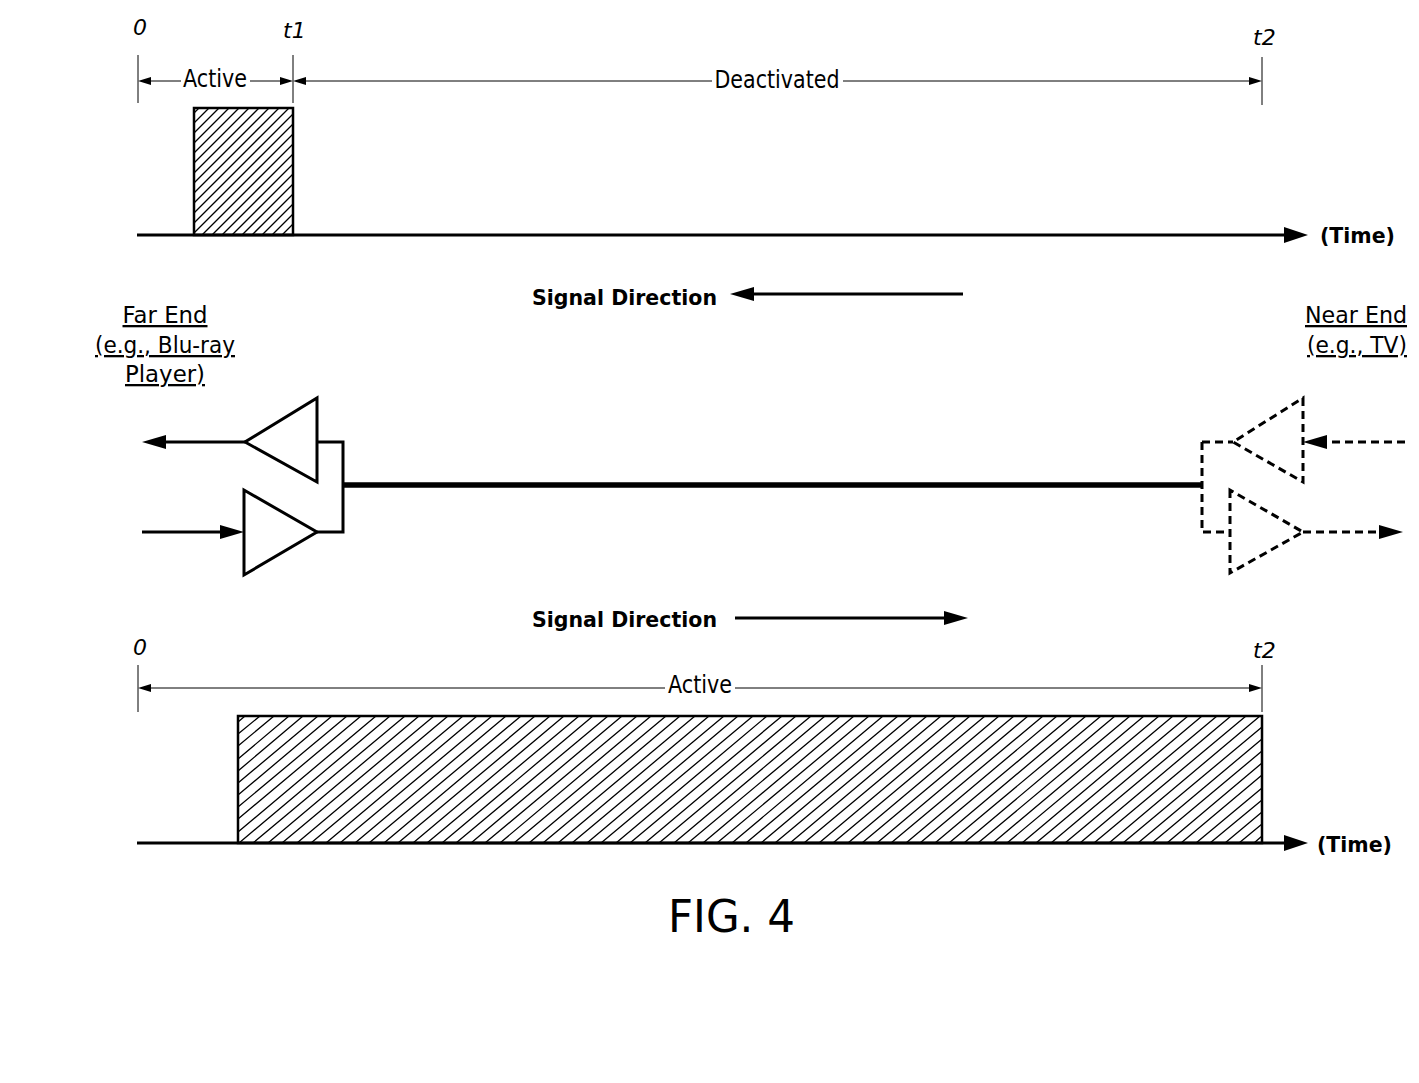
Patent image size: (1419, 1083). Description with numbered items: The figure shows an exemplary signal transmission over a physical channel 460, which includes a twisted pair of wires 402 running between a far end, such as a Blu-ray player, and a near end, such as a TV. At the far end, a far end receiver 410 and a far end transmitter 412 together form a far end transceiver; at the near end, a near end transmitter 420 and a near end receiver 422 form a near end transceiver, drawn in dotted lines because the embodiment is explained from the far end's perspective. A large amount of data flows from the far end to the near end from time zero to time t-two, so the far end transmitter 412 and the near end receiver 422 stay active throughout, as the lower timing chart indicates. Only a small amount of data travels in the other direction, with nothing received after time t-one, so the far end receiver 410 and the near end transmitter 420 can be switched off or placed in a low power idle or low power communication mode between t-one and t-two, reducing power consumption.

The twisted pair of wires 402 is at (460, 489).
The far end receiver 410 is at (229, 432).
The far end transmitter 412 is at (229, 546).
The near end transmitter 420 is at (1319, 434).
The near end receiver 422 is at (1316, 549).
The physical channel 460 is at (415, 396).